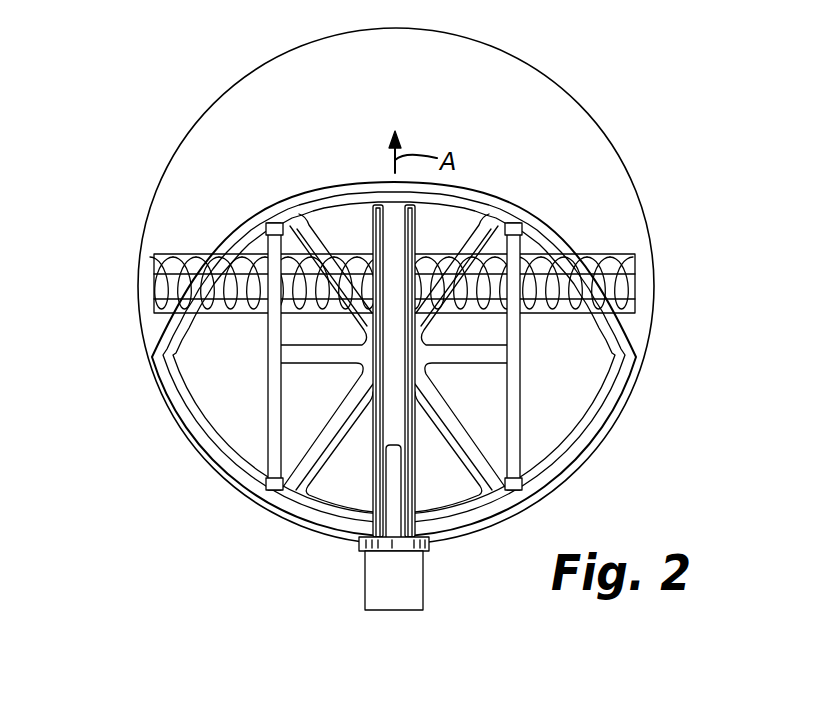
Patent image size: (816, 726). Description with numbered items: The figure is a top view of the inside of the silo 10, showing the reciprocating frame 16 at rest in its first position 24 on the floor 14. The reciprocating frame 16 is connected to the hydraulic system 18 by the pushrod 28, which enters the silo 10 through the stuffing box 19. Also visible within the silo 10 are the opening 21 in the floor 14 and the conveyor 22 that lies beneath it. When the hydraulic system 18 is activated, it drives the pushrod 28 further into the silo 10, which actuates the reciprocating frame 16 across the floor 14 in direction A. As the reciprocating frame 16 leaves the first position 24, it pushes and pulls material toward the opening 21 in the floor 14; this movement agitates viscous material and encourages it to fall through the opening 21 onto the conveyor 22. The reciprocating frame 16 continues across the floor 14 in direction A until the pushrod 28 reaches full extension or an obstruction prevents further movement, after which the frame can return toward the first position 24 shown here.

The silo 10 is at (130, 145).
The floor 14 is at (568, 158).
The reciprocating frame 16 is at (596, 406).
The hydraulic system 18 is at (407, 588).
The stuffing box 19 is at (430, 544).
The opening 21 is at (598, 254).
The conveyor 22 is at (598, 276).
The first position 24 is at (148, 438).
The pushrod 28 is at (395, 458).